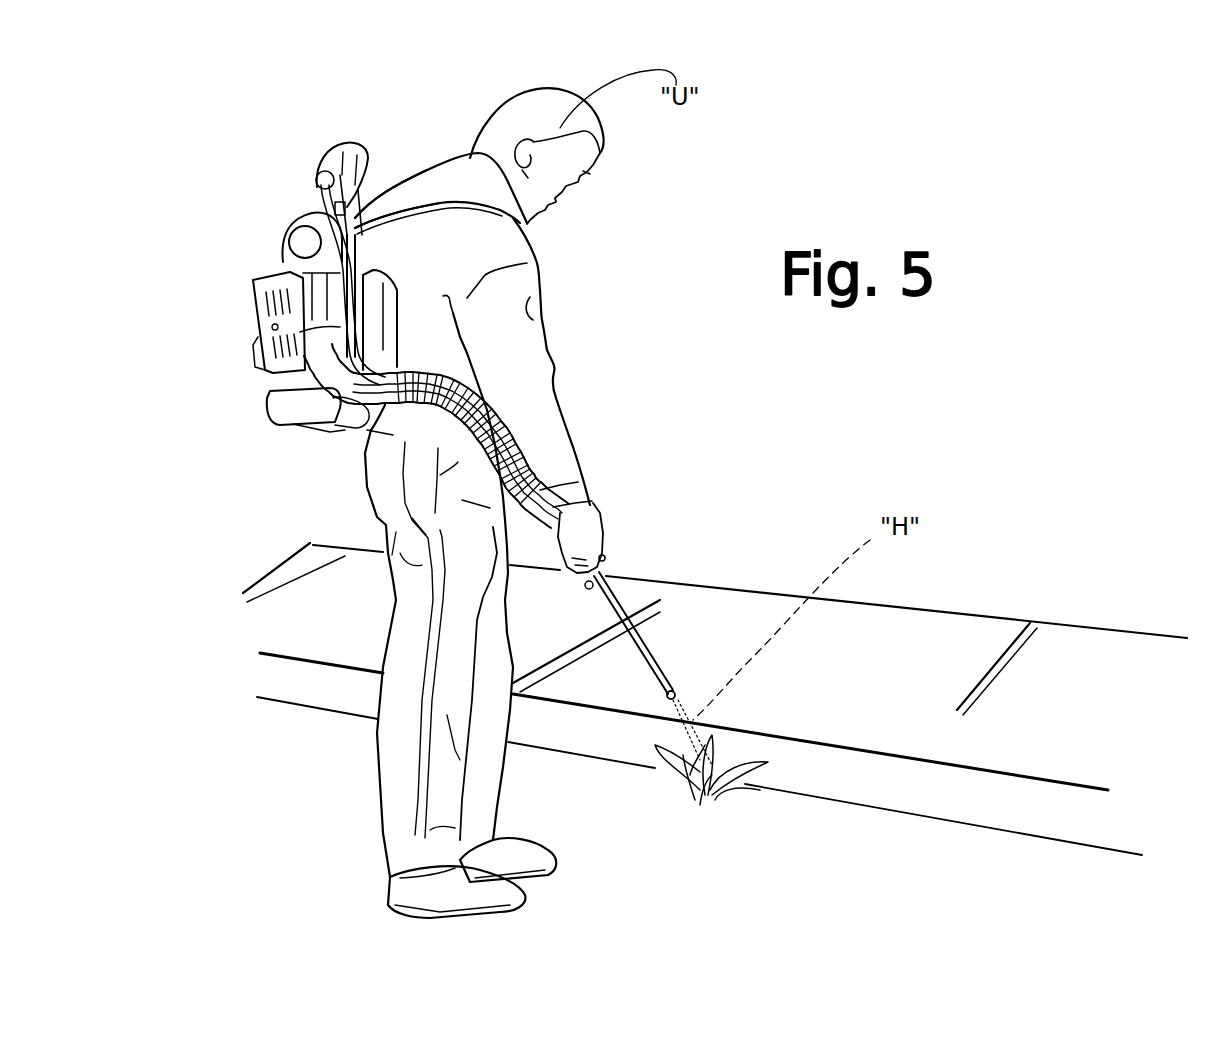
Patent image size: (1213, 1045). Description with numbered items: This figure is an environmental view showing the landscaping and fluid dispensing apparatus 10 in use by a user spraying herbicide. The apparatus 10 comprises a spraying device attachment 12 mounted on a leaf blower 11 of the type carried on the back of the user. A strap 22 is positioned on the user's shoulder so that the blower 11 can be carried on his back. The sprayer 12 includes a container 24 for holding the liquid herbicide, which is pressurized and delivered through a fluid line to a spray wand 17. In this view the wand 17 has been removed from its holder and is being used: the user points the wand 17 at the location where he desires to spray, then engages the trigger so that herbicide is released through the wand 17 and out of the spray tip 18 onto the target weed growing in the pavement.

The landscaping and fluid dispensing apparatus 10 is at (254, 257).
The leaf blower 11 is at (272, 393).
The spraying device attachment 12 is at (596, 577).
The spray wand 17 is at (640, 637).
The spray tip 18 is at (673, 693).
The strap 22 is at (430, 217).
The container 24 is at (342, 157).